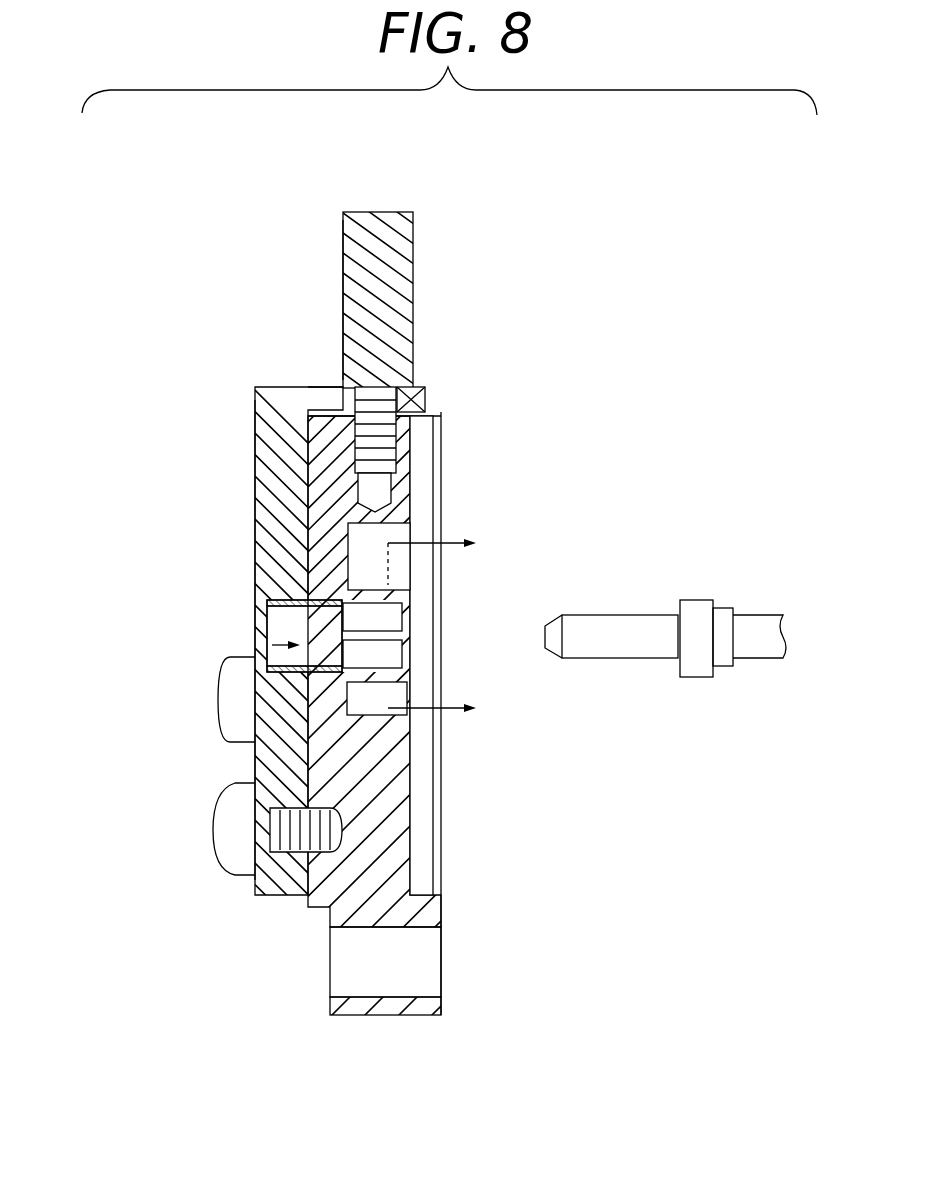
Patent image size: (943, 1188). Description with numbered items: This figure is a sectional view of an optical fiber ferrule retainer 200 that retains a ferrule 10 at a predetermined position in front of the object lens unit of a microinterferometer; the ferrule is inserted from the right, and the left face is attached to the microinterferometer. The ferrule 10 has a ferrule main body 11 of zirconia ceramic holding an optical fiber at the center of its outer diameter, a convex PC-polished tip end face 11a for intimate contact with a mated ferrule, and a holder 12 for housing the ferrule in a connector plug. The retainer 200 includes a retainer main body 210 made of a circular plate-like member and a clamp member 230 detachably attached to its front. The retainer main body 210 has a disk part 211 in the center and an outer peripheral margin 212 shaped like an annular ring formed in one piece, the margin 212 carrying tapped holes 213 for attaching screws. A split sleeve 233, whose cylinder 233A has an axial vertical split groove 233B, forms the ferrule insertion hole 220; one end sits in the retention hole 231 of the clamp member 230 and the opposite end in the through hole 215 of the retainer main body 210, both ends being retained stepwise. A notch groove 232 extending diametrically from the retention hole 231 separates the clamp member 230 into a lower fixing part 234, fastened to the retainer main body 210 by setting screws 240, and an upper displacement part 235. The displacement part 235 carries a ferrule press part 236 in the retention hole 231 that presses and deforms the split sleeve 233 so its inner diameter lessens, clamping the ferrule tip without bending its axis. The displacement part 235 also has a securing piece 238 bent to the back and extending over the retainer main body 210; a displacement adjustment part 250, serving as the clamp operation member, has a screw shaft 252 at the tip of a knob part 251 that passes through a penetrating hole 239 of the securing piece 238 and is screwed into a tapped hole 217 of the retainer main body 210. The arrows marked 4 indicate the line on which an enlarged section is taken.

The ferrule retainer 200 is at (185, 332).
The retainer main body 210 is at (452, 900).
The disk part 211 is at (400, 818).
The outer peripheral margin 212 is at (337, 1015).
The tapped hole 213 is at (430, 965).
The through hole 215 is at (425, 612).
The tapped hole 217 is at (388, 500).
The ferrule insertion hole 220 is at (245, 680).
The clamp member 230 is at (246, 419).
The retention hole 231 is at (257, 614).
The notch groove 232 is at (257, 636).
The split sleeve 233 is at (423, 685).
The cylinder 233A is at (322, 672).
The vertical split groove 233B is at (400, 652).
The fixing part 234 is at (257, 765).
The displacement part 235 is at (255, 487).
The ferrule press part 236 is at (257, 580).
The securing piece 238 is at (320, 388).
The penetrating hole 239 is at (425, 388).
The setting screw 240 is at (225, 855).
The displacement adjustment part 250 is at (420, 232).
The knob part 251 is at (343, 245).
The screw shaft 252 is at (398, 444).
The section line 4- 4 is at (444, 624).
The ferrule 10 is at (657, 598).
The ferrule main body 11 is at (604, 670).
The tip end face 11a is at (538, 640).
The holder 12 is at (697, 677).